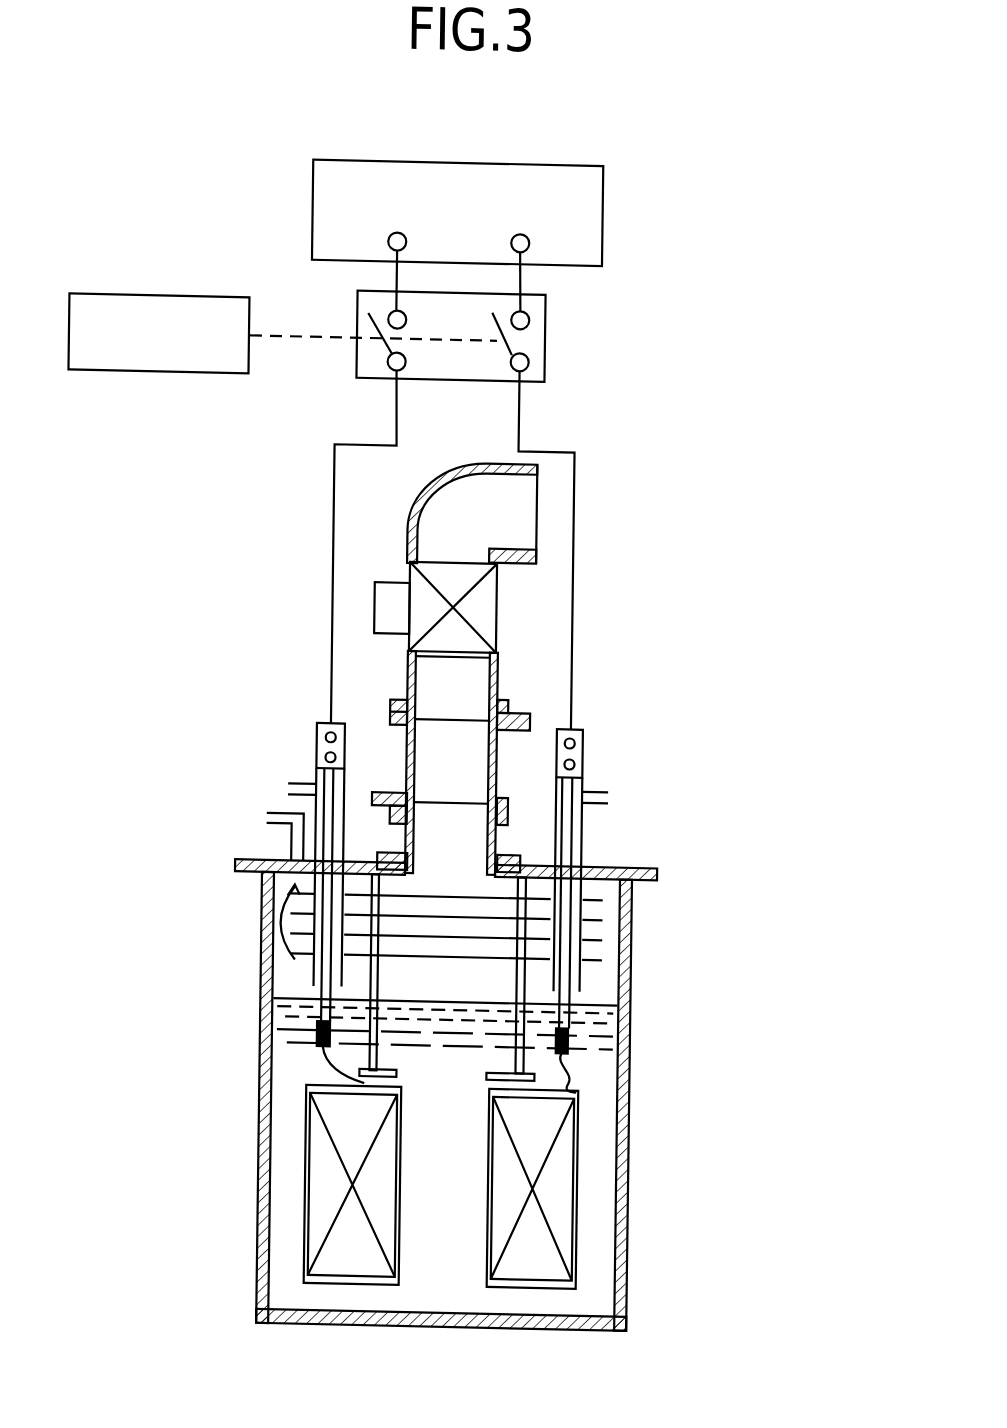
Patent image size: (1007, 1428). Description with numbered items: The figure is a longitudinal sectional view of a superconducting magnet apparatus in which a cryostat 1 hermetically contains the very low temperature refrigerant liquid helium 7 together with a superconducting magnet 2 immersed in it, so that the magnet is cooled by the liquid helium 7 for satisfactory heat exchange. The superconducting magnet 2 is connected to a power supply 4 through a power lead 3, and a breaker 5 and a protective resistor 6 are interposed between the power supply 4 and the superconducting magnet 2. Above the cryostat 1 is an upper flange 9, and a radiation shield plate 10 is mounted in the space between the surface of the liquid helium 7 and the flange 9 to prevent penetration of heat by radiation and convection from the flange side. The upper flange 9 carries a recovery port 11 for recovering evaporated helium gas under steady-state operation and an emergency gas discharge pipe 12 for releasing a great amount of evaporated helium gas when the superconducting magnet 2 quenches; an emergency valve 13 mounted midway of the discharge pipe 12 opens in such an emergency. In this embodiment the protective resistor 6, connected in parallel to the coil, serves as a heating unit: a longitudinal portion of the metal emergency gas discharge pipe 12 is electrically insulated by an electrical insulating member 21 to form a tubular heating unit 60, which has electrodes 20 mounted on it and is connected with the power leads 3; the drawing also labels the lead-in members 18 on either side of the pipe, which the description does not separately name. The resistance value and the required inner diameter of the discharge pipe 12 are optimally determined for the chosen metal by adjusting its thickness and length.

The cryostat 1 is at (632, 1120).
The superconducting magnet 2 is at (565, 1199).
The power lead 3 is at (582, 860).
The power supply 4 is at (595, 216).
The breaker 5 is at (153, 302).
The protective resistor 6 is at (582, 818).
The liquid helium 7 is at (598, 1066).
The flange 9 is at (251, 863).
The radiation shield plate 10 is at (266, 915).
The recovery port 11 is at (267, 818).
The emergency gas discharge pipe 12 is at (495, 672).
The emergency valve 13 is at (413, 619).
The electrode 18 is at (344, 760).
The electrode 20 is at (507, 718).
The electrical insulating member 21 is at (530, 713).
The tubular heating unit 60 is at (582, 776).